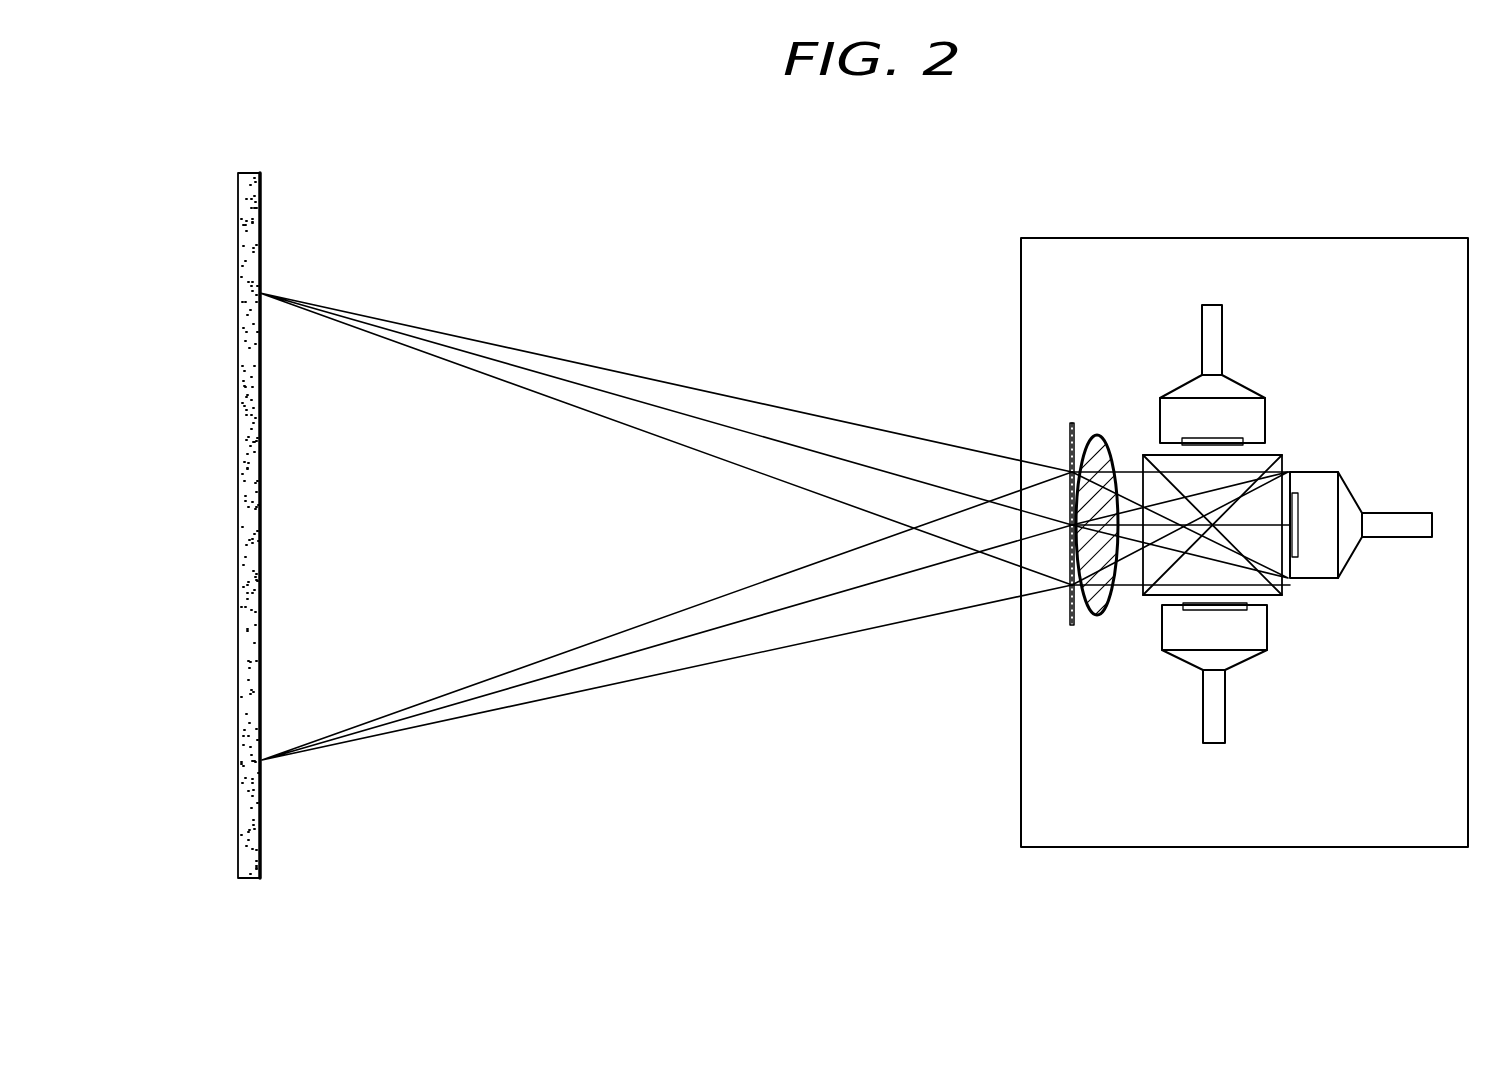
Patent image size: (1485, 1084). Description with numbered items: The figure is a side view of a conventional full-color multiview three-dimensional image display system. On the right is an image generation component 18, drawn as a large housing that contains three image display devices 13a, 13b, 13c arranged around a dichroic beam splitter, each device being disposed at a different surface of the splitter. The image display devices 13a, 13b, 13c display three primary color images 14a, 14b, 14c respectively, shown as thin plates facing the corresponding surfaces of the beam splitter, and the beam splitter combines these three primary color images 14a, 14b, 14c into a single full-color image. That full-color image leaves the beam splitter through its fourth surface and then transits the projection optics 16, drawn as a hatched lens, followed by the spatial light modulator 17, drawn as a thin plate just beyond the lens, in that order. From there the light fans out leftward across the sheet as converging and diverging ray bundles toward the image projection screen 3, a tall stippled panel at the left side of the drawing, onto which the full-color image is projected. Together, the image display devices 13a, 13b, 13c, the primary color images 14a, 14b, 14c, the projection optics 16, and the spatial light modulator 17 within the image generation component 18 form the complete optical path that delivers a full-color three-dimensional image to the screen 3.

The image projection screen 3 is at (245, 213).
The image display device 13a is at (1227, 363).
The image display device 13b is at (1375, 550).
The image display device 13c is at (1232, 692).
The primary color image 14a is at (1232, 438).
The primary color image 14b is at (1298, 527).
The primary color image 14c is at (1243, 607).
The projection optics 16 is at (1104, 612).
The spatial light modulator 17 is at (1071, 625).
The image generation component 18 is at (1203, 238).